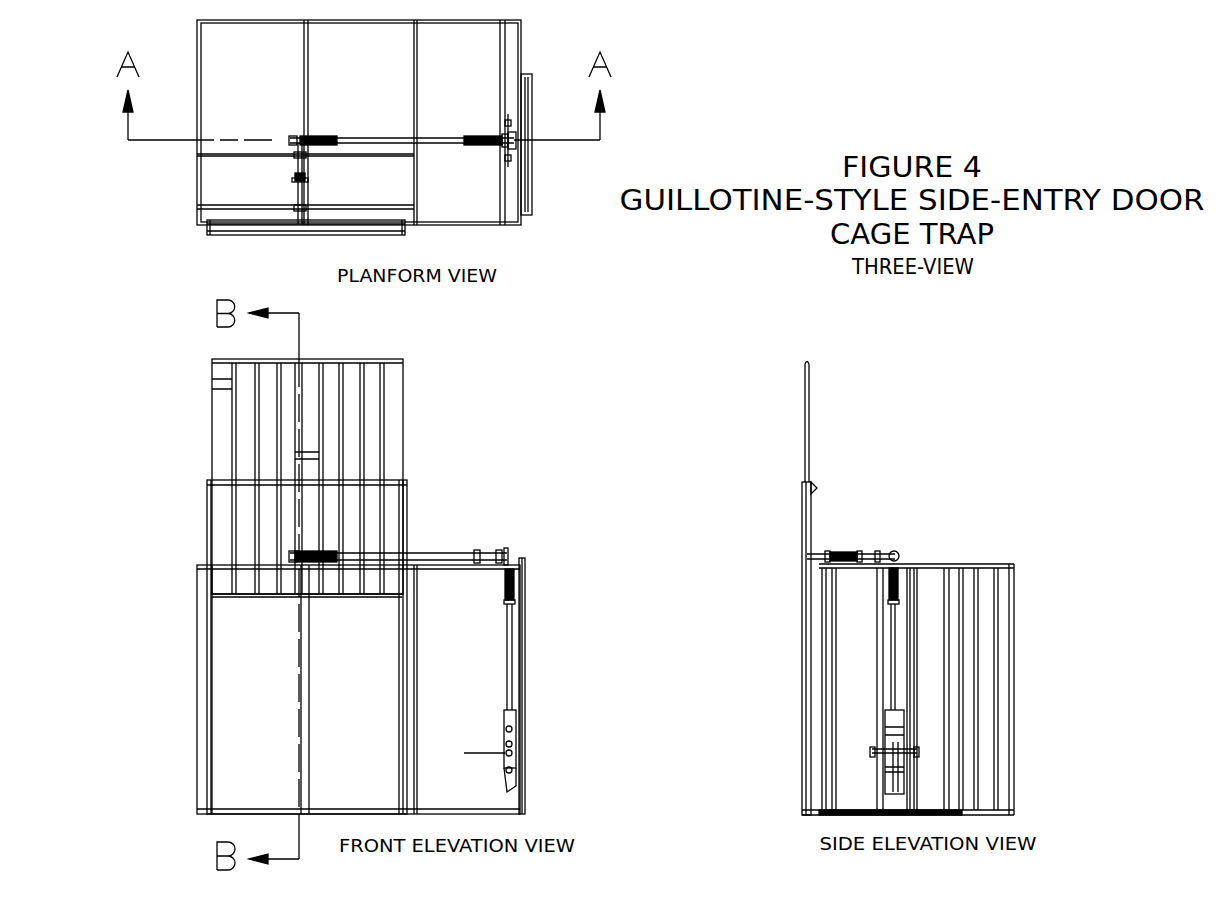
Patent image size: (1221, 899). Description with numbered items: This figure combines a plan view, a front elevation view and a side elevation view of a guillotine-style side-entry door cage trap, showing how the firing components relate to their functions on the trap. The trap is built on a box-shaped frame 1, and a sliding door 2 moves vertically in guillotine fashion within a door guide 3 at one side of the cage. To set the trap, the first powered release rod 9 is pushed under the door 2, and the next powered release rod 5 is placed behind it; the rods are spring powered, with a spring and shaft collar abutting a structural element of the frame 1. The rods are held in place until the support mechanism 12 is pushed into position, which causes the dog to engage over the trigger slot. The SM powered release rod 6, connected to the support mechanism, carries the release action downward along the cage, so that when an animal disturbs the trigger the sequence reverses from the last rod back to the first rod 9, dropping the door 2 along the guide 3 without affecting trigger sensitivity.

The frame 1 is at (192, 673).
The sliding door 2 is at (207, 233).
The door guide channel 3 is at (528, 188).
The powered release rod 5 is at (367, 134).
The SM powered release rod 6 is at (510, 620).
The first powered release rod 9 is at (292, 163).
The support mechanism 12 is at (880, 708).